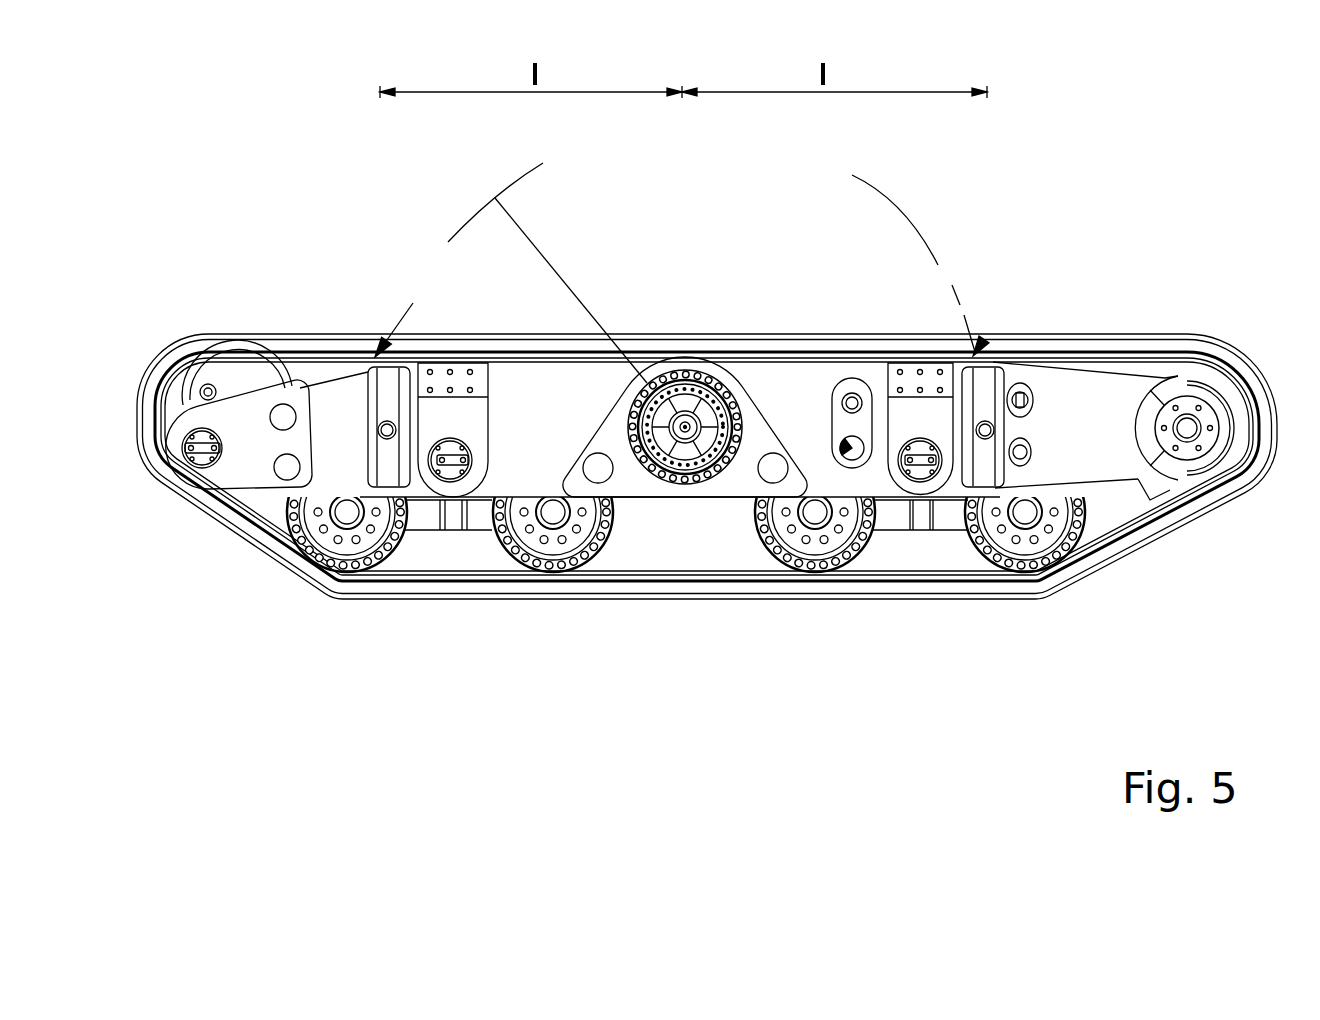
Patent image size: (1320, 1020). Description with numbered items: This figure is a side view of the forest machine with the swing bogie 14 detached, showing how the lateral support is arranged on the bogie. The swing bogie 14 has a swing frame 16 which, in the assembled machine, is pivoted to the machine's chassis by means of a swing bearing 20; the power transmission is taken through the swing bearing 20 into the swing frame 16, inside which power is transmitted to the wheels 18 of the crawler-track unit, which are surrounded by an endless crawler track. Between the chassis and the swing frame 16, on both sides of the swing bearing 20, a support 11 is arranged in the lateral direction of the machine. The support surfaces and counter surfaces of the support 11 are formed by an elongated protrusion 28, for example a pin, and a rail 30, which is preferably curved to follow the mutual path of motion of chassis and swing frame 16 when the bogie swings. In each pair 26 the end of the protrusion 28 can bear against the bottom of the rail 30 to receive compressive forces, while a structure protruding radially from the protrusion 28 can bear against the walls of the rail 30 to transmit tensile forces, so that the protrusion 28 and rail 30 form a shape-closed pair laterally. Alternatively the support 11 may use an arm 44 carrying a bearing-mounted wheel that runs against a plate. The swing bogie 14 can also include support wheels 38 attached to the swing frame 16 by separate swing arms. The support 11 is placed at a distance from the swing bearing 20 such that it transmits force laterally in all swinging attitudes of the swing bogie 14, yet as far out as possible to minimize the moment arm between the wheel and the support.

The support 11 is at (404, 346).
The swing bogie 14 is at (1068, 272).
The swing frame 16 is at (1101, 445).
The wheels 18 is at (281, 374).
The swing bearing 20 is at (733, 386).
The pair 26 is at (378, 370).
The protrusion 28 is at (372, 485).
The rail 30 is at (318, 575).
The support wheels 38 is at (300, 555).
The arm 44 is at (517, 513).